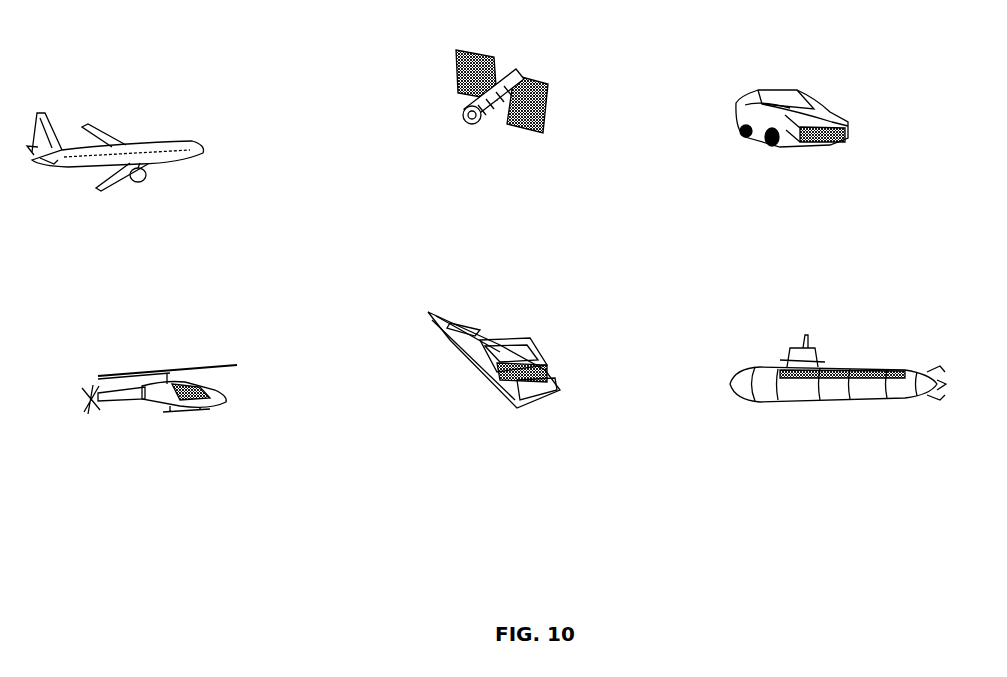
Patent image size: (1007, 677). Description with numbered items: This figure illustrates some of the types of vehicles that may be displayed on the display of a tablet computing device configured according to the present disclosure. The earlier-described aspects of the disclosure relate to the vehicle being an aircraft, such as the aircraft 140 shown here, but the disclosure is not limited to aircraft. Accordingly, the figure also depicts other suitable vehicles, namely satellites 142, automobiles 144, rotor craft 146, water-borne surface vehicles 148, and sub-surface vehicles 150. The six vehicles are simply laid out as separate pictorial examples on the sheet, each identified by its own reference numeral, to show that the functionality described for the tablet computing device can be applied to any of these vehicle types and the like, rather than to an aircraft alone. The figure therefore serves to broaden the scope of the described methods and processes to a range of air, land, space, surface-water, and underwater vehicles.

The aircraft 140 is at (135, 126).
The satellites 142 is at (498, 36).
The automobiles 144 is at (827, 81).
The rotor craft 146 is at (194, 337).
The water-borne surface vehicles 148 is at (510, 305).
The sub-surface vehicles 150 is at (860, 339).